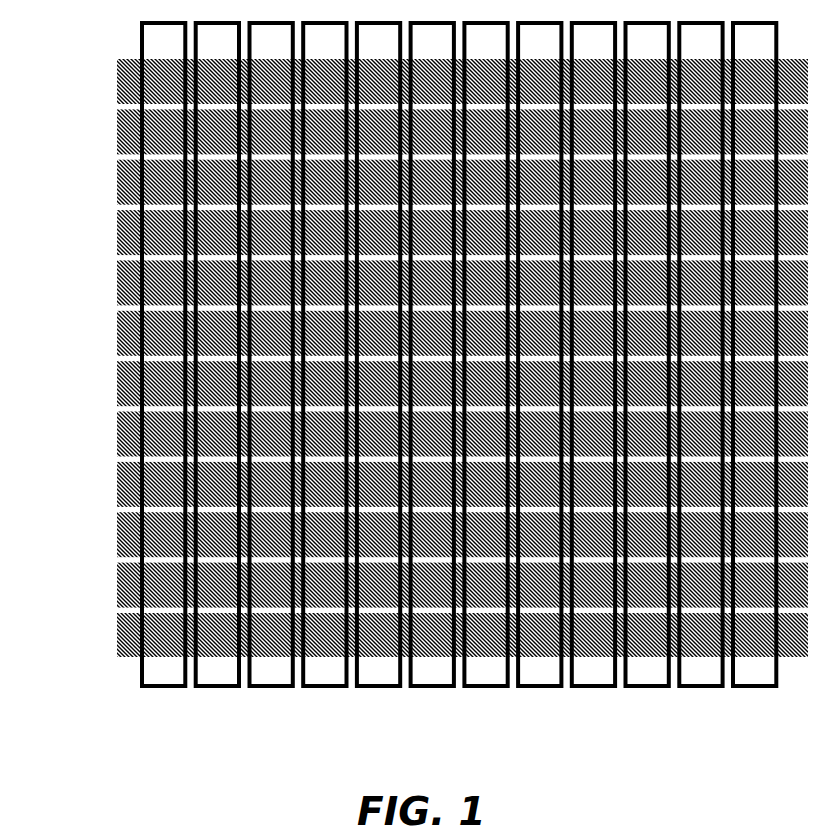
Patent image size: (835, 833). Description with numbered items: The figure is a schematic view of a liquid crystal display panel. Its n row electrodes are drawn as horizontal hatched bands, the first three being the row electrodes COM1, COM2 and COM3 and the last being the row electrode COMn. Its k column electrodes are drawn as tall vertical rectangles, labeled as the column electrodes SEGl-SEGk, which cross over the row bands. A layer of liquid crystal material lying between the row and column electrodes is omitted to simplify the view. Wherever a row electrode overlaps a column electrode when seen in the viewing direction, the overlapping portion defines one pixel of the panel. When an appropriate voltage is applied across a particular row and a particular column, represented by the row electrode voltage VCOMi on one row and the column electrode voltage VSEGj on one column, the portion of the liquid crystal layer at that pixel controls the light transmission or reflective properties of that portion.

The row electrode COM1 is at (118, 80).
The row electrode COM2 is at (118, 133).
The row electrode COM3 is at (118, 185).
The row electrode voltage VCOMi is at (118, 384).
The row electrode COMn is at (118, 636).
The column electrode voltage VSEGj is at (593, 653).
The column electrodes SEGl-SEGk is at (459, 397).